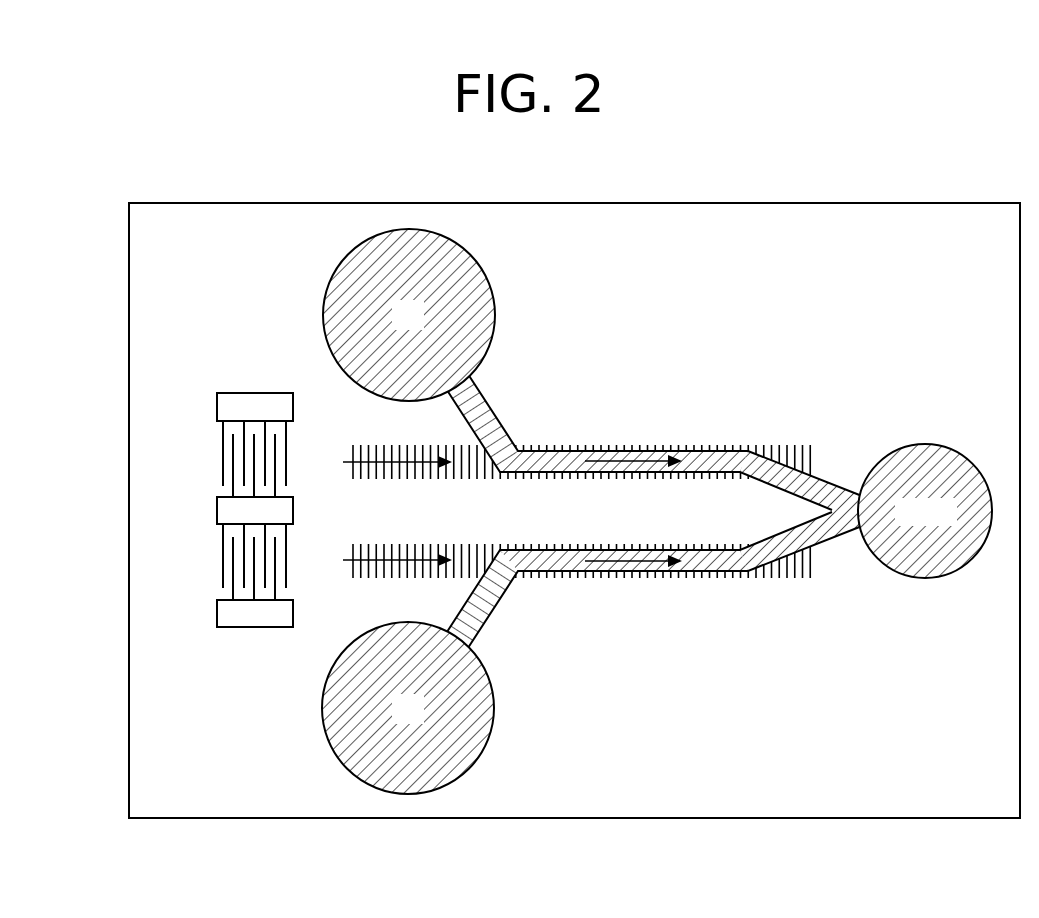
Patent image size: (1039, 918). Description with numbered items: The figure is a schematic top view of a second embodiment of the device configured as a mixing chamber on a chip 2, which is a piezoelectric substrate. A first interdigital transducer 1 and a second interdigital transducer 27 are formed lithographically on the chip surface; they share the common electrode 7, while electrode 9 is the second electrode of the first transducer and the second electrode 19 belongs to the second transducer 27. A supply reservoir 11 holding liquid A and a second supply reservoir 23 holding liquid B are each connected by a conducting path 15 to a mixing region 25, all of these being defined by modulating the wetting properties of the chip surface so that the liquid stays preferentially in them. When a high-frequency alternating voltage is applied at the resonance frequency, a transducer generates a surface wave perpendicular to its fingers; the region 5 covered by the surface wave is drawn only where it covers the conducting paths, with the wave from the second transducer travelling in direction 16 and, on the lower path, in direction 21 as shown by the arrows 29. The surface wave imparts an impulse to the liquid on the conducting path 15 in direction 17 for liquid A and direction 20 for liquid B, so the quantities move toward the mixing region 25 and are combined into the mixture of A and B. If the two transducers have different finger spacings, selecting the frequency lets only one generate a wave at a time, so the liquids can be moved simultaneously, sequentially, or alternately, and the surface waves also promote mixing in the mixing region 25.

The interdigital transducer 1 is at (186, 436).
The chip 2 is at (846, 223).
The region covered by the surface wave 5 is at (361, 450).
The electrode 7 is at (218, 505).
The electrode 9 is at (250, 398).
The supply reservoir 11 is at (413, 232).
The conducting path 15 is at (697, 477).
The direction 16 is at (402, 478).
The direction 17 is at (631, 452).
The second electrode 19 is at (250, 627).
The direction 20 is at (631, 568).
The acoustic wave fronts 21 is at (360, 575).
The second supply reservoir 23 is at (413, 800).
The mixing region 25 is at (936, 558).
The second interdigital transducer 27 is at (186, 585).
The surface acoustic wave 29 is at (408, 555).